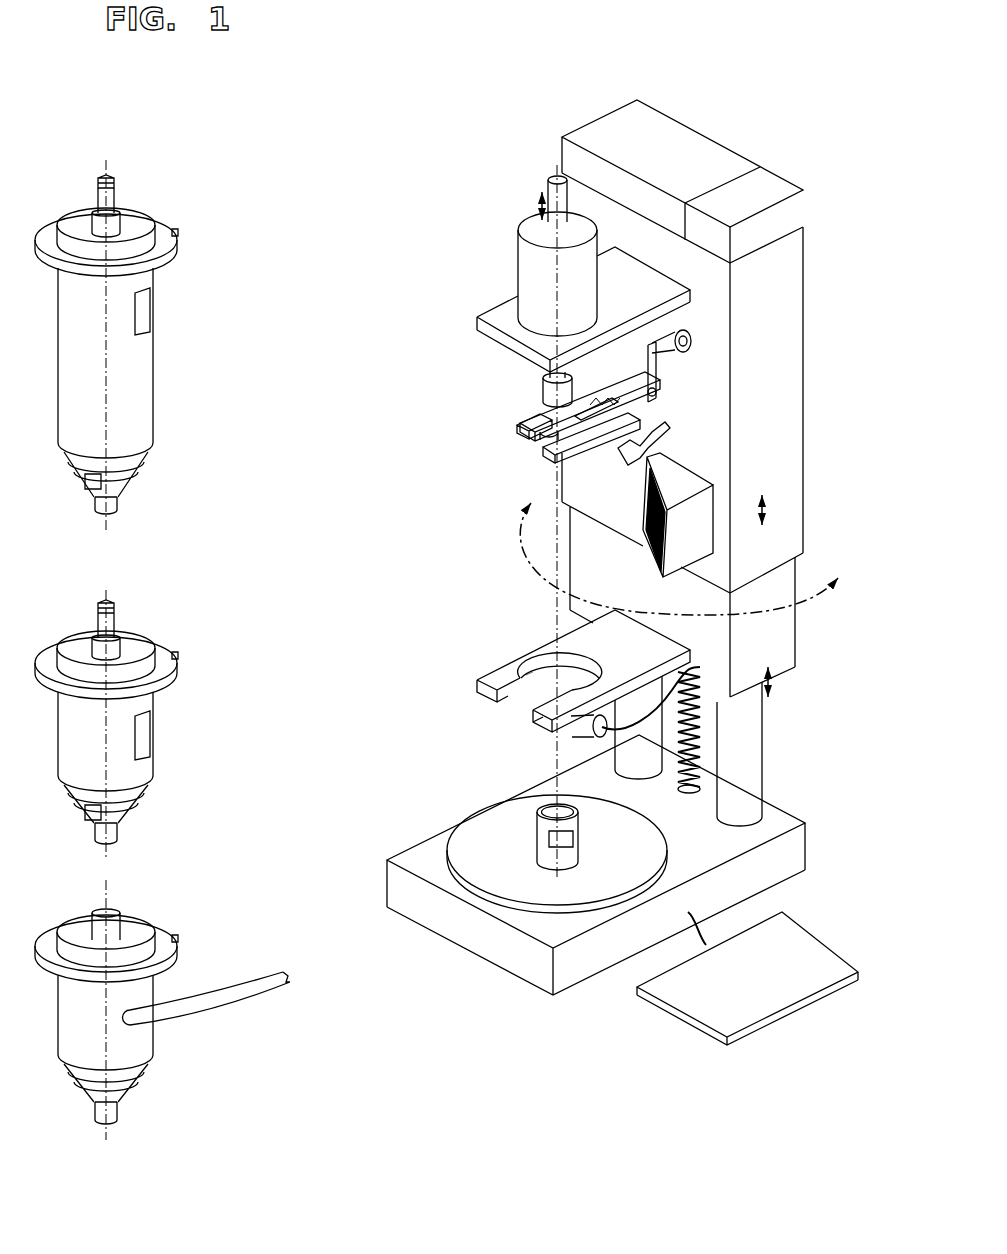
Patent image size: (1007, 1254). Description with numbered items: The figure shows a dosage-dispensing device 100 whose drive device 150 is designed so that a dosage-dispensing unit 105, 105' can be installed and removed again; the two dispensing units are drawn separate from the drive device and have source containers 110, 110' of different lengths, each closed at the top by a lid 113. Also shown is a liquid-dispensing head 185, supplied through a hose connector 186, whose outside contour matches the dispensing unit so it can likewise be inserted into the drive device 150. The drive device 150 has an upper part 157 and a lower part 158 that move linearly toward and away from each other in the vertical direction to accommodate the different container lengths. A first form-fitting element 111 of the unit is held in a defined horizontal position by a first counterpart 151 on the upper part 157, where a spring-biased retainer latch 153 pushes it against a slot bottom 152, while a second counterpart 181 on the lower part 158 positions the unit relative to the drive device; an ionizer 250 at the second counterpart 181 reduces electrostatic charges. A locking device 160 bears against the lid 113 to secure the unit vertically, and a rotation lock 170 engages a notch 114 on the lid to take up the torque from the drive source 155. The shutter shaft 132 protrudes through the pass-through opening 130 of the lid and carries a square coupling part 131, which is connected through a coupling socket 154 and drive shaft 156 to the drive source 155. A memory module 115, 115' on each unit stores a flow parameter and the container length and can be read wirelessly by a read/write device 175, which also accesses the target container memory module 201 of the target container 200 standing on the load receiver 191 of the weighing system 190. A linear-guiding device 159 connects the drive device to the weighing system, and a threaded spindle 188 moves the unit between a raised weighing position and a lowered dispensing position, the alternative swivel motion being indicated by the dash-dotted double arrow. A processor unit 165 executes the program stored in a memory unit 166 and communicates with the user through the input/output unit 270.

The dosage-dispensing device 100 is at (405, 105).
The dosage-dispensing unit 105 is at (162, 300).
The dosage-dispensing unit 105' is at (166, 725).
The source container 110 is at (173, 363).
The source container 110' is at (176, 727).
The first form-fitting element 111 is at (108, 223).
The lid 113 is at (140, 223).
The notch 114 is at (178, 233).
The memory module 115 is at (211, 300).
The memory module 115' is at (215, 724).
The pass-through opening 130 is at (122, 196).
The coupling part 131 is at (110, 180).
The shutter shaft 132 is at (108, 197).
The drive device 150 is at (703, 124).
The first counterpart 151 is at (614, 373).
The slot bottom 152 is at (568, 431).
The retainer latch 153 is at (523, 423).
The coupling socket 154 is at (548, 392).
The drive source 155 is at (533, 273).
The drive shaft 156 is at (548, 371).
The upper part 157 is at (747, 392).
The lower part 158 is at (747, 642).
The linear-guiding device 159 is at (725, 762).
The locking device 160 is at (598, 446).
The processor unit 165 is at (638, 157).
The memory unit 166 is at (730, 210).
The rotation lock 170 is at (625, 455).
The read/write device 175 is at (648, 465).
The second counterpart 181 is at (593, 637).
The liquid-dispensing head 185 is at (126, 1043).
The hose connector 186 is at (238, 994).
The threaded spindle 188 is at (535, 680).
The weighing system 190 is at (427, 858).
The load receiver 191 is at (505, 840).
The target container 200 is at (537, 823).
The target container memory module 201 is at (560, 838).
The ionizer 250 is at (676, 717).
The input/output unit 270 is at (741, 987).